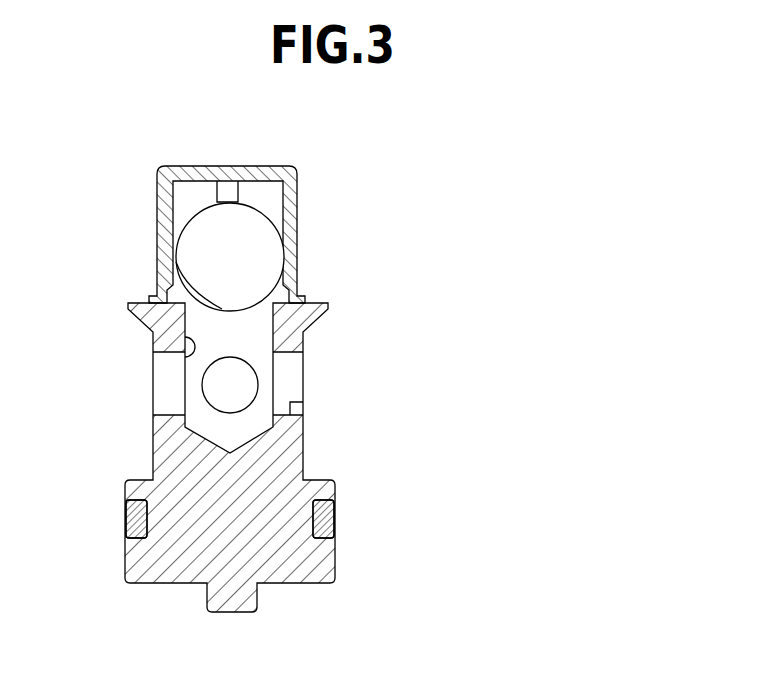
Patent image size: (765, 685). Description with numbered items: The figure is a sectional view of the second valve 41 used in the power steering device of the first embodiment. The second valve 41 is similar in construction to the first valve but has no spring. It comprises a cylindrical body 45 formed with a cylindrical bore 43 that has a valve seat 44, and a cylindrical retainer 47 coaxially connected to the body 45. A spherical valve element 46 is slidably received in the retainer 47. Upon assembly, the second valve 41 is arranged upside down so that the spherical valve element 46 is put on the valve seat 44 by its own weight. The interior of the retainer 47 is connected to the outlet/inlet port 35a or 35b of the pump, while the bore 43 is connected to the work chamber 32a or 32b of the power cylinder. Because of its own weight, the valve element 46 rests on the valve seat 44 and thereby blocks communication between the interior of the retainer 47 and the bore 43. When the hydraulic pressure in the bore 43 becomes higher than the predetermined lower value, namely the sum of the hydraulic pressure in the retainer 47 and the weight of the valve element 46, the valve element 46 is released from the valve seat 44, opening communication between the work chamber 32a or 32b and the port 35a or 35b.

The second valve 41 is at (335, 211).
The cylindrical retainer 47 is at (157, 192).
The spherical valve element 46 is at (250, 262).
The valve seat 44 is at (176, 262).
The cylindrical bore 43 is at (155, 363).
The cylindrical body 45 is at (277, 490).
The outlet/inlet port 35a is at (412, 195).
The outlet/inlet port 35b is at (298, 195).
The work chamber 32a is at (449, 404).
The work chamber 32b is at (290, 402).